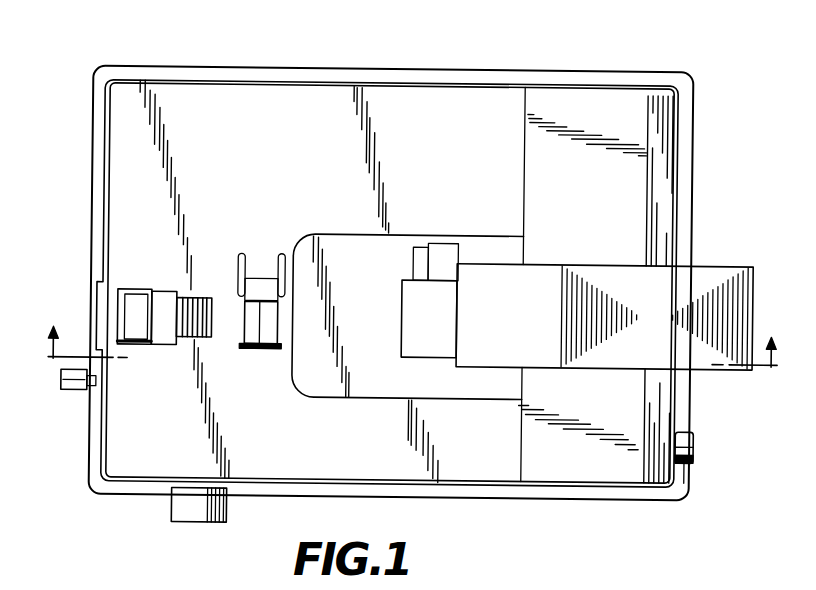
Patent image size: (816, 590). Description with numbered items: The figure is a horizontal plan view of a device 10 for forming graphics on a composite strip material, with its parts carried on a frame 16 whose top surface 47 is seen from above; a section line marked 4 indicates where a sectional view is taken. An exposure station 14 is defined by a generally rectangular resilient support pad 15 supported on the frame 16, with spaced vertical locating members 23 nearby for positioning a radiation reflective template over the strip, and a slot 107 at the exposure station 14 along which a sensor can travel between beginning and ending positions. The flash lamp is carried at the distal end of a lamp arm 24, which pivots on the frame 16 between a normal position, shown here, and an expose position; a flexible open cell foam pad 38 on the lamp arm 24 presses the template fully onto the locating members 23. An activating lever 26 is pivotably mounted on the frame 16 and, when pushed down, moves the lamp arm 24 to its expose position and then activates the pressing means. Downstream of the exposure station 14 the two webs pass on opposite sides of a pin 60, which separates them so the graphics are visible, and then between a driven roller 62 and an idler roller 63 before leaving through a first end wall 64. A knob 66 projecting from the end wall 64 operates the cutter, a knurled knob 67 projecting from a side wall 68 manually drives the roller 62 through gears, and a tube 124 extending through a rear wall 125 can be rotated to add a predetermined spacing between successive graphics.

The device for forming graphics 10 is at (494, 66).
The frame 16 is at (340, 96).
The top surface of the frame 47 is at (262, 142).
The first end wall 64 is at (100, 422).
The lamp arm 24 is at (418, 350).
The foam pad 38 is at (420, 252).
The activating lever 26 is at (592, 278).
The idler roller 63 is at (133, 302).
The driven roller 62 is at (176, 297).
The pin 60 is at (206, 308).
The knob 66 is at (79, 394).
The exposure station 14 is at (248, 329).
The locating members 23 is at (277, 281).
The resilient support pad 15 is at (267, 352).
The slot 107 is at (280, 351).
The knurled knob 67 is at (207, 512).
The side wall 68 is at (281, 491).
The tube 124 is at (696, 445).
The rear wall 125 is at (681, 474).
The section line 4- 4 is at (401, 373).